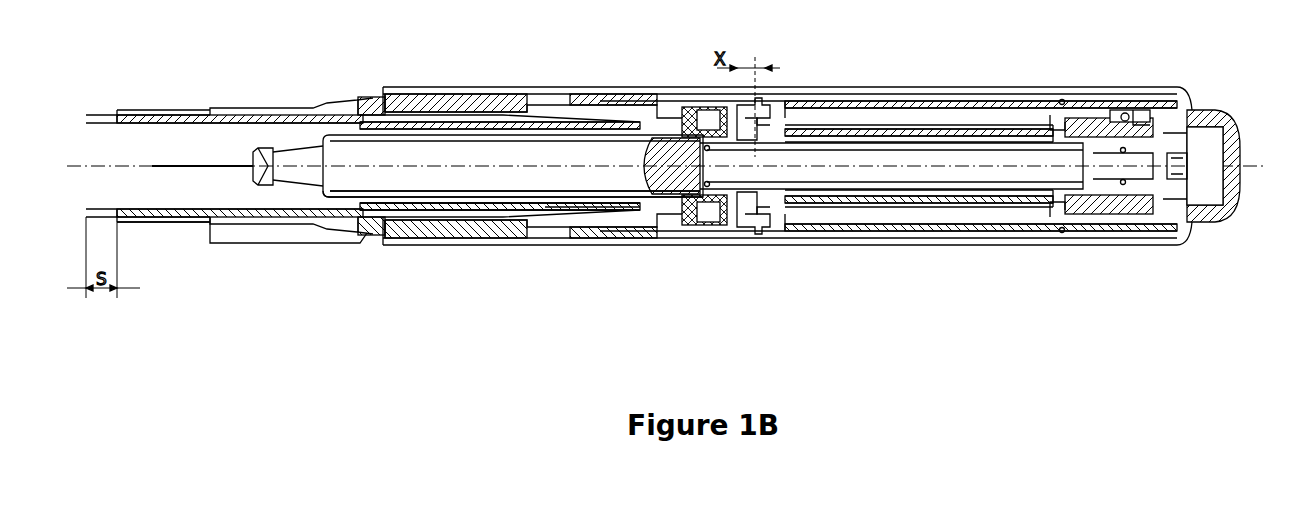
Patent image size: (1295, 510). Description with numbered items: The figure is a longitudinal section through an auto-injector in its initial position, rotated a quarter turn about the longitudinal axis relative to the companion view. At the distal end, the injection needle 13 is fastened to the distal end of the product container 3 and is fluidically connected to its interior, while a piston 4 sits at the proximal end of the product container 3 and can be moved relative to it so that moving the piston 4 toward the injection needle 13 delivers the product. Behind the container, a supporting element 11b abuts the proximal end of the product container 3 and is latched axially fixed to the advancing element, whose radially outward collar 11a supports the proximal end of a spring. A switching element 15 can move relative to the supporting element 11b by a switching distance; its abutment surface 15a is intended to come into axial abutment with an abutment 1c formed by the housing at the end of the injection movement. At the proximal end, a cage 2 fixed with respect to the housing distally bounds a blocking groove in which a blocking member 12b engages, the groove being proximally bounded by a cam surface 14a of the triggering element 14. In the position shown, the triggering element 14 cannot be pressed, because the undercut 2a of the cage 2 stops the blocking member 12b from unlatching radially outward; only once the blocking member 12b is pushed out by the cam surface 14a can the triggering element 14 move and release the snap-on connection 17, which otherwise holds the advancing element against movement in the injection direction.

The injection needle 13 is at (203, 173).
The product container 3 is at (545, 207).
The piston 4 is at (638, 200).
The abutment 1c is at (655, 223).
The switching element 15 is at (747, 222).
The abutment surface 15a is at (762, 213).
The supporting element 11b is at (782, 222).
The collar 11a is at (1058, 122).
The cage 2 is at (1093, 212).
The undercut 2a is at (1118, 118).
The blocking member 12b is at (1127, 115).
The cam surface 14a is at (1133, 117).
The snap-on connection 17 is at (1177, 167).
The triggering element 14 is at (1210, 213).